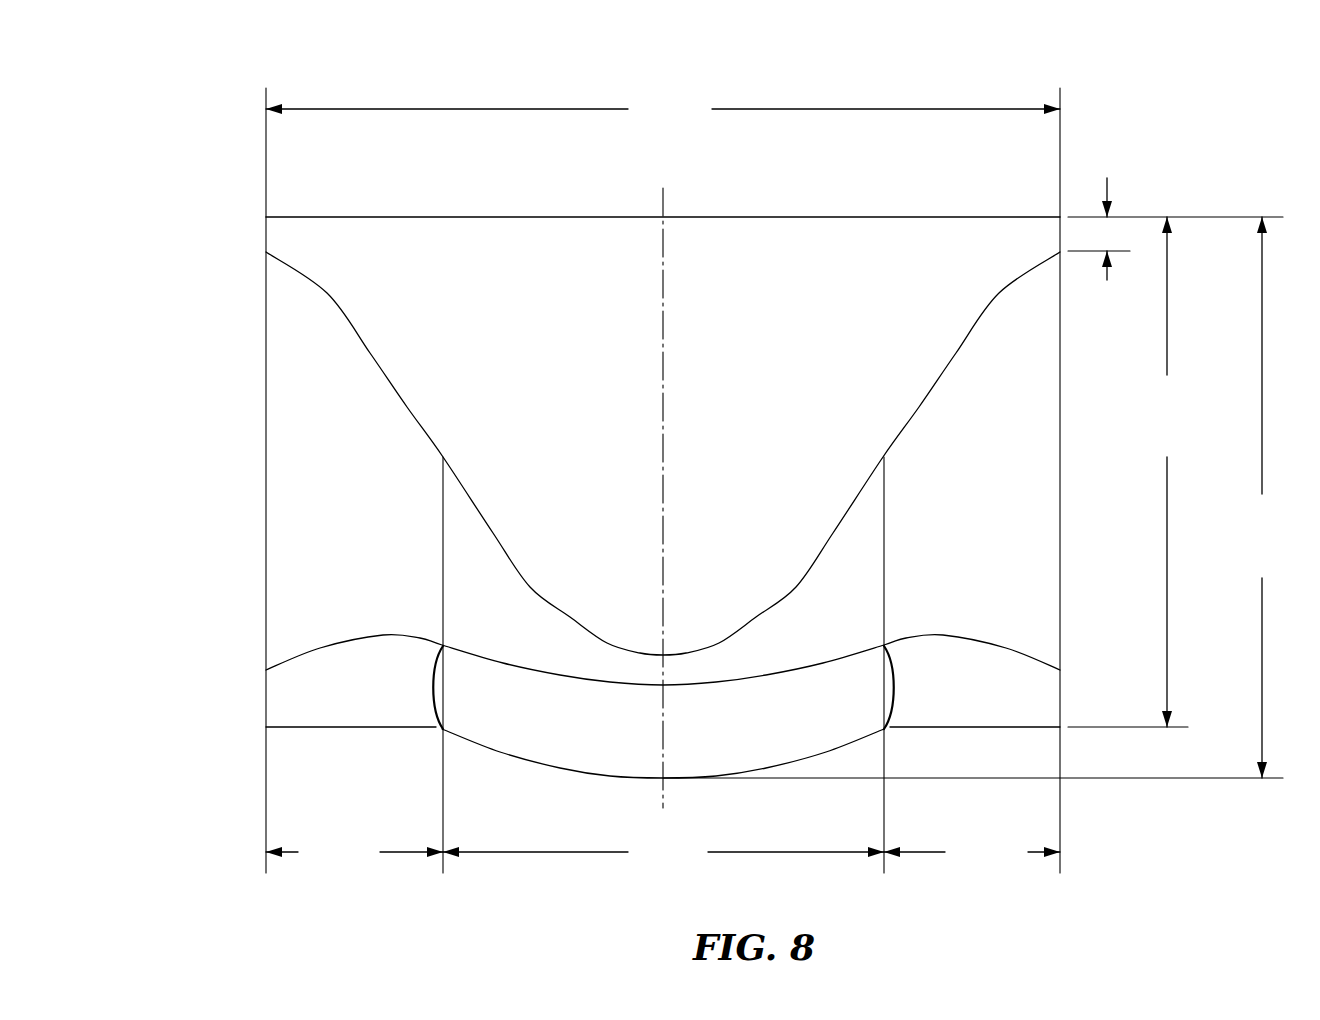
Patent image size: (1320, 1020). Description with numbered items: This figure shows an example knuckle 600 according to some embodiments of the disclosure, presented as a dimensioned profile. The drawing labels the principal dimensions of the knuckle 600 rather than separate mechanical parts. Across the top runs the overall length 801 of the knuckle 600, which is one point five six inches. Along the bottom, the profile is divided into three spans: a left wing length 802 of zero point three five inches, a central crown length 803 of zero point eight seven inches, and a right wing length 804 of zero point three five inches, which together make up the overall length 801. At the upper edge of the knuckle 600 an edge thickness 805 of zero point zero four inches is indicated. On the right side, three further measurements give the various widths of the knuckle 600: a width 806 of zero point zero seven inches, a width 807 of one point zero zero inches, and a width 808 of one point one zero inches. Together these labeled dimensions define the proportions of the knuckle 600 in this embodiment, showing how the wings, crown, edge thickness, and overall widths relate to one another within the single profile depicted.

The knuckle 600 is at (611, 408).
The overall length 801 is at (663, 109).
The left wing length 802 is at (354, 852).
The crown length 803 is at (663, 852).
The right wing length 804 is at (972, 852).
The edge thickness 805 is at (857, 216).
The width 806 is at (1103, 250).
The width 807 is at (1167, 472).
The width 808 is at (1261, 497).